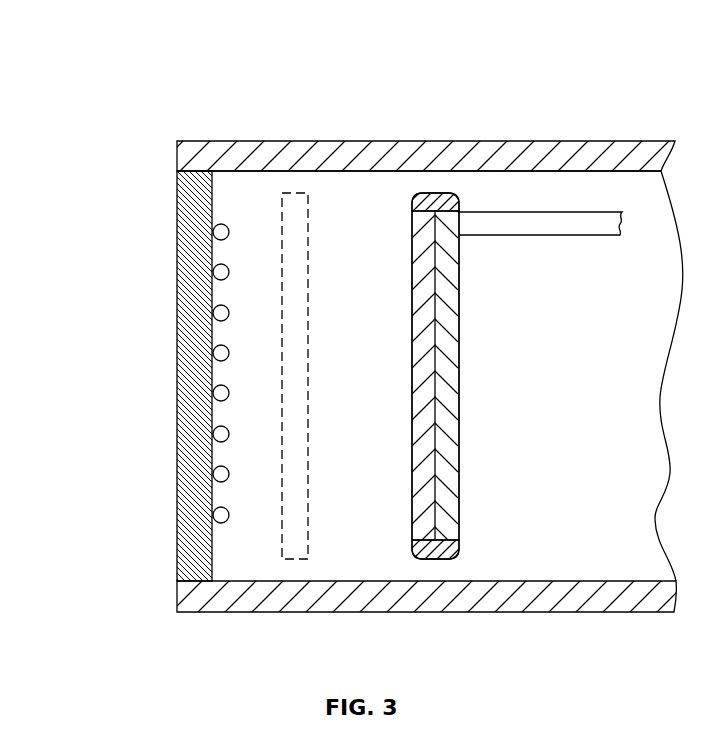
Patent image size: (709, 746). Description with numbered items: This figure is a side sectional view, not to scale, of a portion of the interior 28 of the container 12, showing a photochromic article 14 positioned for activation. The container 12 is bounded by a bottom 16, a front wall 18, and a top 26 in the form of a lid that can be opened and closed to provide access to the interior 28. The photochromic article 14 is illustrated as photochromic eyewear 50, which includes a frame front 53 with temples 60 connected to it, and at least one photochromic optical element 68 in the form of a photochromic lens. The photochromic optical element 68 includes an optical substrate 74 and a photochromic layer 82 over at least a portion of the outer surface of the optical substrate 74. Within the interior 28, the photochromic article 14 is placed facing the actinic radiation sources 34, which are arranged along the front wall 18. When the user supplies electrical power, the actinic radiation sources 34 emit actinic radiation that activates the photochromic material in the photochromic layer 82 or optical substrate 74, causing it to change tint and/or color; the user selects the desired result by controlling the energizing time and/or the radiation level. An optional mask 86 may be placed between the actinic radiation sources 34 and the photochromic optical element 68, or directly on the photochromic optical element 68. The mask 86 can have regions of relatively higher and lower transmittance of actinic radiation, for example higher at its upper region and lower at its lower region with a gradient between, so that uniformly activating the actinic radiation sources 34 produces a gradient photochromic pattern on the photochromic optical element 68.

The container 12 is at (167, 650).
The photochromic article 14 is at (508, 180).
The photochromic eyewear 50 is at (426, 140).
The bottom 16 is at (283, 612).
The front wall 18 is at (190, 170).
The top 26 is at (295, 171).
The interior 28 is at (537, 420).
The actinic radiation sources 34 is at (228, 266).
The frame front 53 is at (435, 559).
The temples 60 is at (566, 236).
The photochromic optical element 68 is at (447, 85).
The optical substrate 74 is at (440, 195).
The photochromic layer 82 is at (417, 195).
The mask 86 is at (295, 193).